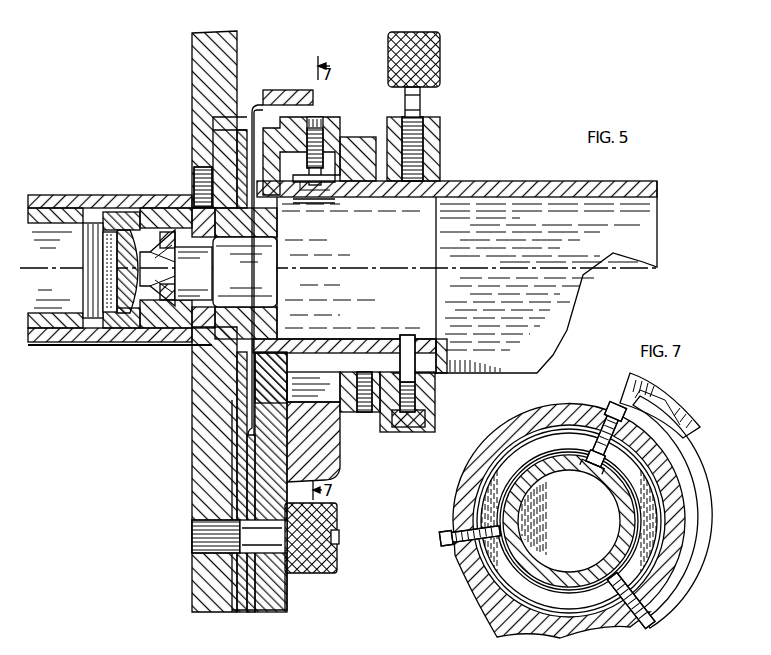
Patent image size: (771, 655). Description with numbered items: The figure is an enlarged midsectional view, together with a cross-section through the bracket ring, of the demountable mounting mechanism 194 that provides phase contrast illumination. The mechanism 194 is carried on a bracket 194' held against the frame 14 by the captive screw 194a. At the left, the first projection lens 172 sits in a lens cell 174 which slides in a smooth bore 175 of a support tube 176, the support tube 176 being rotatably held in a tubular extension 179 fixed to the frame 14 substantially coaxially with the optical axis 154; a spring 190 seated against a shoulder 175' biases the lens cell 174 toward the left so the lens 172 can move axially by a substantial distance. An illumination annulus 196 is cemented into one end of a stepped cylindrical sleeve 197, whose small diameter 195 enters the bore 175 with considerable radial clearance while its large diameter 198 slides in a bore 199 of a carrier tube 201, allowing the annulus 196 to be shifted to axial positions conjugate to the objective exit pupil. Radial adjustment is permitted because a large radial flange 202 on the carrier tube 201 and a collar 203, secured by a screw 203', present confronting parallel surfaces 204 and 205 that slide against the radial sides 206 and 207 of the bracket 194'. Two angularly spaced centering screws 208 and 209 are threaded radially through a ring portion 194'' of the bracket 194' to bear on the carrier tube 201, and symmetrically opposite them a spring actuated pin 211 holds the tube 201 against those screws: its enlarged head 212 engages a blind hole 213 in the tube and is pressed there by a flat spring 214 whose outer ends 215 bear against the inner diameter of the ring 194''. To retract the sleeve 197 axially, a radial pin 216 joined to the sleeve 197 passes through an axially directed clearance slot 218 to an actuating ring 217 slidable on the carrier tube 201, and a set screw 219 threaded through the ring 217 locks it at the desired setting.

In FIG. 5, the frame 14 is at (192, 105).
In FIG. 5, the optical axis 154 is at (476, 270).
In FIG. 5, the first projection lens 172 is at (133, 228).
In FIG. 5, the lens cell 174 is at (115, 343).
In FIG. 5, the smooth bore 175 is at (166, 289).
In FIG. 5, the shoulder 175' is at (97, 196).
In FIG. 5, the support tube 176 is at (134, 330).
In FIG. 5, the tubular extension 179 is at (120, 346).
In FIG. 5, the spring 190 is at (84, 270).
In FIG. 5, the second demountable mounting mechanism 194 is at (232, 338).
In FIG. 5, the bracket 194' is at (314, 598).
In FIG. 5, the captive screw 194a is at (338, 558).
In FIG. 7, the ring portion 194'' is at (559, 521).
In FIG. 5, the small diameter 195 is at (188, 212).
In FIG. 5, the illumination annulus 196 is at (166, 272).
In FIG. 5, the stepped cylindrical sleeve 197 is at (416, 262).
In FIG. 5, the large diameter 198 is at (440, 212).
In FIG. 5, the bore 199 is at (600, 200).
In FIG. 5, the carrier tube 201 is at (520, 195).
In FIG. 5, the radial flange 202 is at (286, 360).
In FIG. 5, the collar 203 is at (366, 139).
In FIG. 5, the screw 203' is at (341, 418).
In FIG. 5, the radial surface 204 is at (253, 118).
In FIG. 5, the radial surface 205 is at (312, 206).
In FIG. 5, the radial side 206 is at (287, 90).
In FIG. 5, the radial side 207 is at (336, 128).
In FIG. 7, the centering screw 208 is at (457, 545).
In FIG. 7, the centering screw 209 is at (650, 614).
In FIG. 5, the spring actuated pin 211 is at (318, 124).
In FIG. 7, the spring actuated pin 211 is at (612, 420).
In FIG. 5, the enlarged head 212 is at (318, 200).
In FIG. 7, the enlarged head 212 is at (605, 458).
In FIG. 5, the blind hole 213 is at (306, 206).
In FIG. 7, the blind hole 213 is at (592, 456).
In FIG. 5, the flat spring 214 is at (300, 206).
In FIG. 7, the flat spring 214 is at (686, 463).
In FIG. 7, the outer ends 215 is at (497, 468).
In FIG. 5, the radial pin 216 is at (407, 335).
In FIG. 5, the actuating ring 217 is at (436, 412).
In FIG. 5, the clearance slot 218 is at (481, 370).
In FIG. 5, the set screw 219 is at (441, 60).